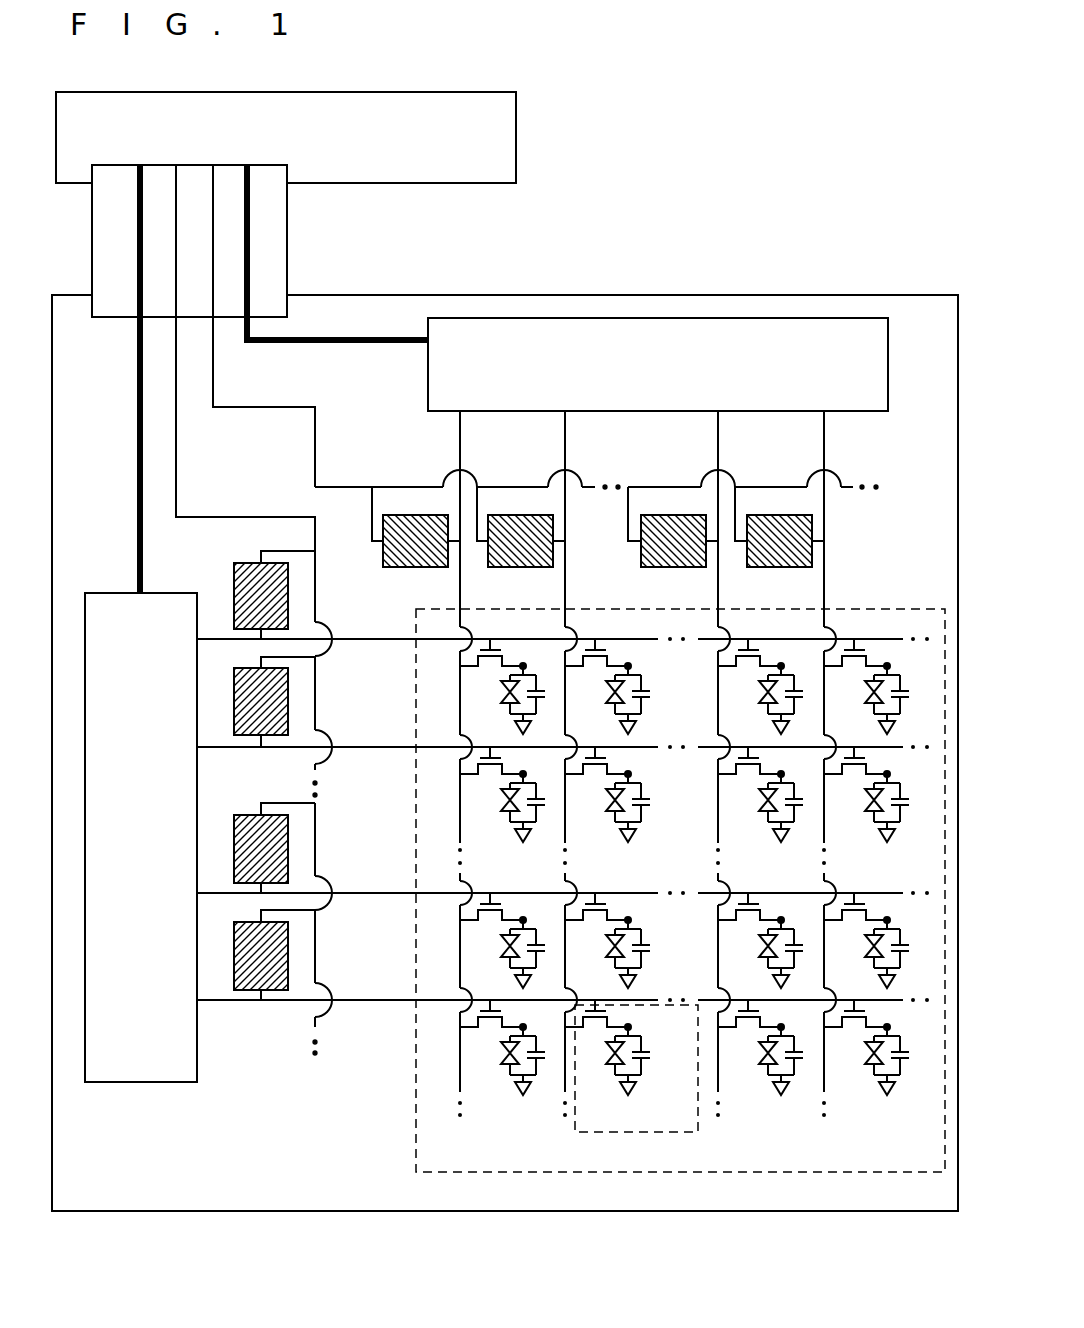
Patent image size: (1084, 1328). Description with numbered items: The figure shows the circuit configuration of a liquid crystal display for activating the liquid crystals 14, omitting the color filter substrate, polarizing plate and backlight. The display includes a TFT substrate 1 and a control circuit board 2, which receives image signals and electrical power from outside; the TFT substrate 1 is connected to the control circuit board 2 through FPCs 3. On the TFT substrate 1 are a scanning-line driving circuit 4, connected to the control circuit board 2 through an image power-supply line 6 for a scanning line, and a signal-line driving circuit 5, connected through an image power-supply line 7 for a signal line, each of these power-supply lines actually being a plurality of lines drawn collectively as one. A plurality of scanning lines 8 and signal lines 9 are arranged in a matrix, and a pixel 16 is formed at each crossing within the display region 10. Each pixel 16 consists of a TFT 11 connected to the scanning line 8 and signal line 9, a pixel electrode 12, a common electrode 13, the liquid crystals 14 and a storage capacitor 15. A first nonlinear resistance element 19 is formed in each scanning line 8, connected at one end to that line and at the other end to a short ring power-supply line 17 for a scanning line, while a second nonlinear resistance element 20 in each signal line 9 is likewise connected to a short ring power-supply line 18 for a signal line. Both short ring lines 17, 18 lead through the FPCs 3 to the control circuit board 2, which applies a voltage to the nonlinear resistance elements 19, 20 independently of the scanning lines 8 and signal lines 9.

The TFT substrate 1 is at (508, 1212).
The control circuit board 2 is at (516, 142).
The FPCs 3 is at (92, 232).
The scanning-line driving circuit 4 is at (103, 593).
The signal-line driving circuit 5 is at (658, 318).
The image power-supply line for a scanning line 6 is at (137, 438).
The image power-supply line for a signal line 7 is at (378, 337).
The scanning line 8 is at (372, 1002).
The signal line 9 is at (826, 577).
The display region 10 is at (680, 910).
The TFT 11 is at (597, 1035).
The pixel electrode 12 is at (632, 1025).
The common electrode 13 is at (638, 1089).
The liquid crystals 14 is at (612, 1068).
The storage capacitor 15 is at (651, 1056).
The pixel 16 is at (634, 1086).
The short ring power-supply line for a scanning line 17 is at (232, 517).
The short ring power-supply line for a signal line 18 is at (262, 408).
The nonlinear resistance element 19 is at (222, 916).
The nonlinear resistance element 20 is at (781, 592).